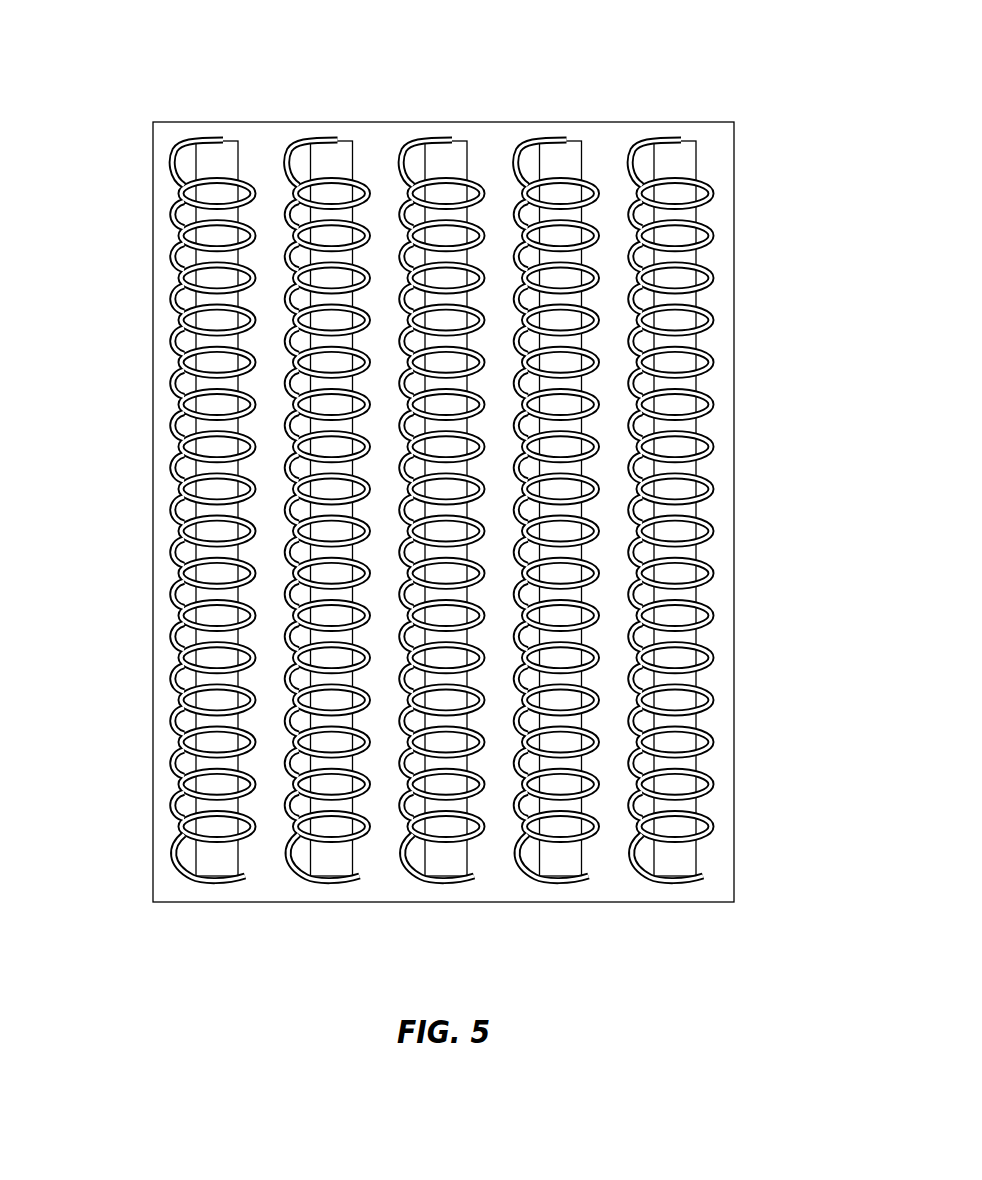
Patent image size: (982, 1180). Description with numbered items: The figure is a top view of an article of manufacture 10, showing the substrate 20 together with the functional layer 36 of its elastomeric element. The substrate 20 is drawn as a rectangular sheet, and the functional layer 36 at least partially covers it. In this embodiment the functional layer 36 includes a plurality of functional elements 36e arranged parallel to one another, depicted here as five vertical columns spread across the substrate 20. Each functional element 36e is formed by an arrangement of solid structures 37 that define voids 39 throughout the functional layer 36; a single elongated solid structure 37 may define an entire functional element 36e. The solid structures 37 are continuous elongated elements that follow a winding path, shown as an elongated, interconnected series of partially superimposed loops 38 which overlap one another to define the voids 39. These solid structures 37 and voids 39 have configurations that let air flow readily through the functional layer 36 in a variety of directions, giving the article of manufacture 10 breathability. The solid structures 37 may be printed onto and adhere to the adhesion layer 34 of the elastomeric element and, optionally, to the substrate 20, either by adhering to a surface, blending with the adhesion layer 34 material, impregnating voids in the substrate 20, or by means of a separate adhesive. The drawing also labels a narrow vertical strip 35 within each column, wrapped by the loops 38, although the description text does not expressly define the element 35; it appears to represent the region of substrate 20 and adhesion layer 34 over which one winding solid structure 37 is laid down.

The article of manufacture 10 is at (95, 100).
The substrate 20 is at (733, 123).
The adhesion layer 34 is at (712, 214).
The strip 35 is at (553, 343).
The functional layer 36 is at (170, 888).
The functional element 36e is at (668, 886).
The solid structure 37 is at (300, 876).
The loops 38 is at (252, 195).
The voids 39 is at (232, 190).